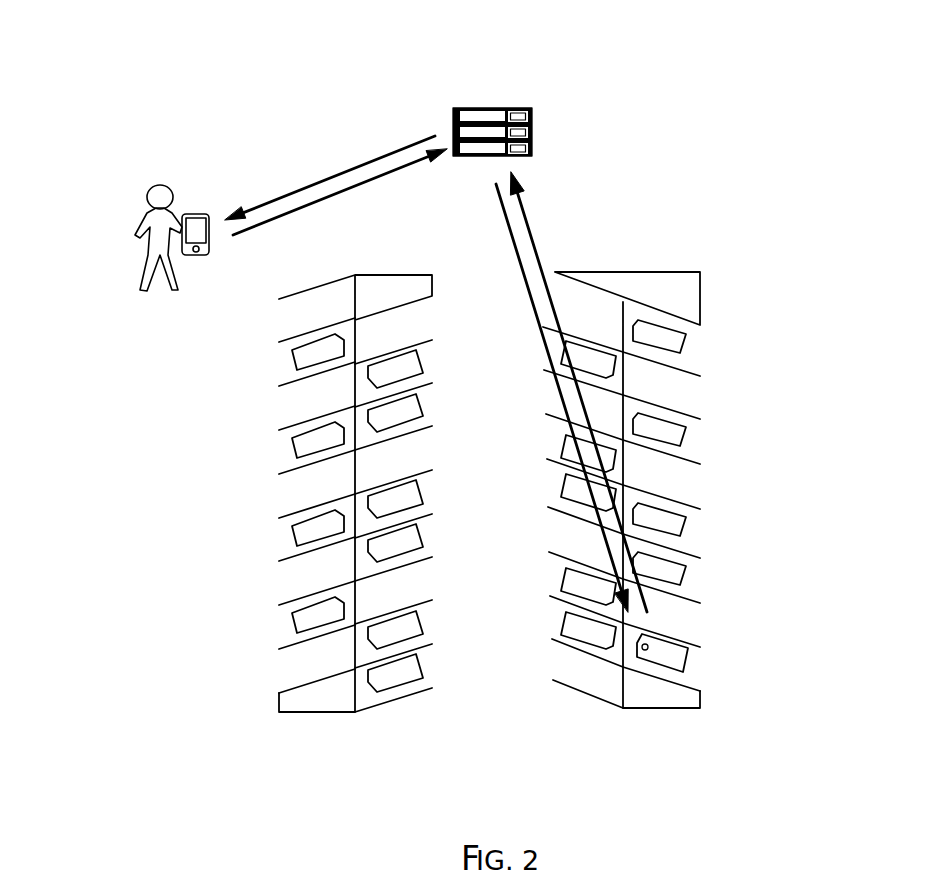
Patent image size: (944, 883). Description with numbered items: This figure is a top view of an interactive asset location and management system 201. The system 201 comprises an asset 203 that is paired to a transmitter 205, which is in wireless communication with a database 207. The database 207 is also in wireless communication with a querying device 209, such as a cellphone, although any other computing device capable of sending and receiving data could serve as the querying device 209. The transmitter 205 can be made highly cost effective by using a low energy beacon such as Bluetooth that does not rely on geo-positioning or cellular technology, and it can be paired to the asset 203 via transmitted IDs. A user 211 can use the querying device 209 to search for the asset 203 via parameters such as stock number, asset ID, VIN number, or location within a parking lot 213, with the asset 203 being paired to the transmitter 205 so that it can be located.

The interactive asset location and management system 201 is at (158, 61).
The asset 203 is at (688, 663).
The transmitter 205 is at (648, 645).
The database 207 is at (533, 115).
The querying device 209 is at (201, 214).
The user 211 is at (148, 192).
The parking lot 213 is at (681, 457).